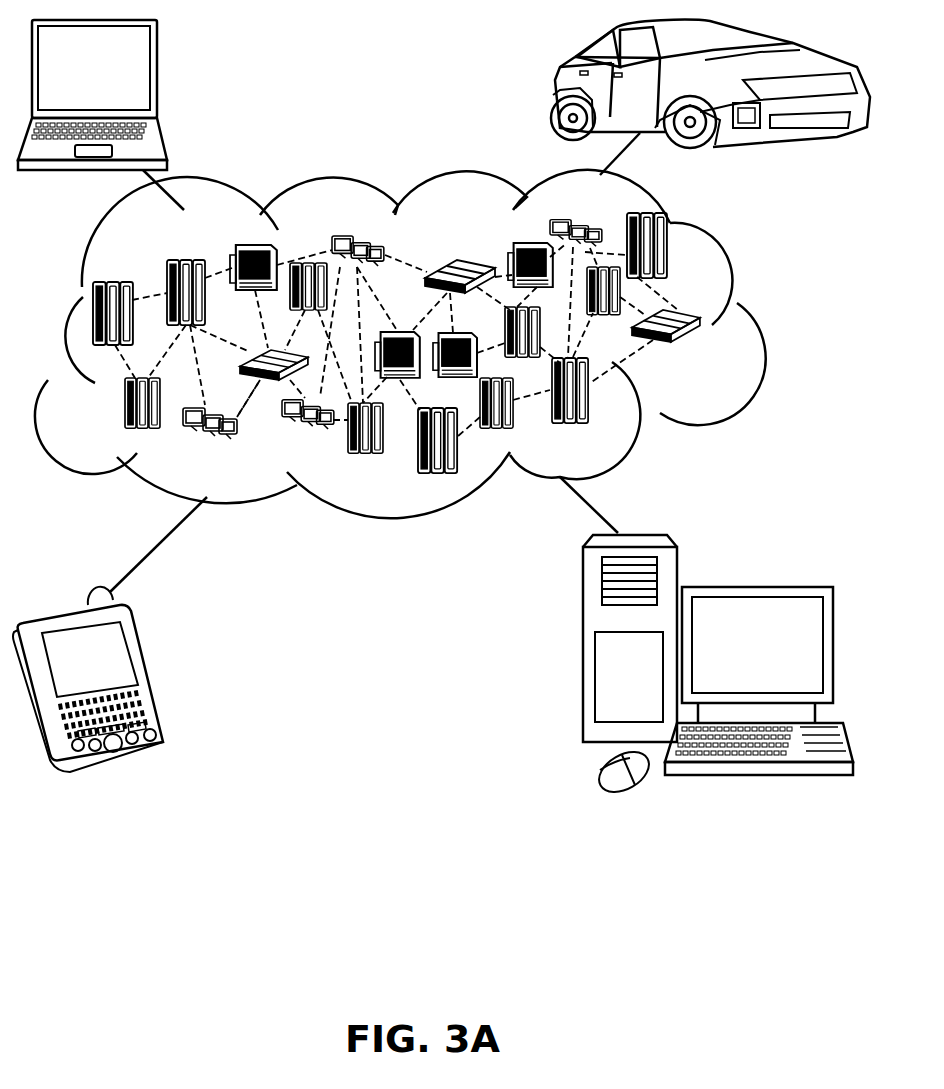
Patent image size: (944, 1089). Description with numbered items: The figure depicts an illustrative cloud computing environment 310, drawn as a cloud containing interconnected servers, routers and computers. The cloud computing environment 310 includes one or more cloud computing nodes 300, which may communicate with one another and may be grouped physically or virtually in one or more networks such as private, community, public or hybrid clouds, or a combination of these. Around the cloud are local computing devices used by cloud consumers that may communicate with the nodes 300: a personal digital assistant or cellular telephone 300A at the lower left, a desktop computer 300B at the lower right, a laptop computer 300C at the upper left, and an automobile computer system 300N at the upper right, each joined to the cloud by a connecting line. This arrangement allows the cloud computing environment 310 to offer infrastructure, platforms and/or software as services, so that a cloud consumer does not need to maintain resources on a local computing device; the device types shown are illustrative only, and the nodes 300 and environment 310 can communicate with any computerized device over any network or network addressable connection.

The cloud computing nodes 300 is at (700, 352).
The cloud computing environment 310 is at (757, 313).
The personal digital assistant (PDA) or cellular telephone 300A is at (148, 673).
The desktop computer 300B is at (755, 585).
The laptop computer 300C is at (158, 72).
The automobile computer system 300N is at (557, 88).